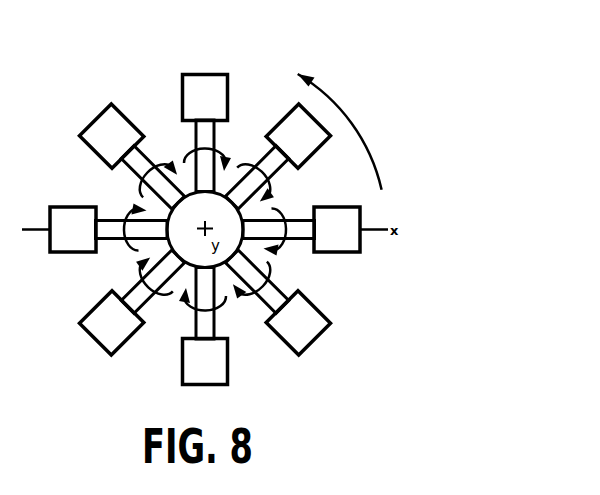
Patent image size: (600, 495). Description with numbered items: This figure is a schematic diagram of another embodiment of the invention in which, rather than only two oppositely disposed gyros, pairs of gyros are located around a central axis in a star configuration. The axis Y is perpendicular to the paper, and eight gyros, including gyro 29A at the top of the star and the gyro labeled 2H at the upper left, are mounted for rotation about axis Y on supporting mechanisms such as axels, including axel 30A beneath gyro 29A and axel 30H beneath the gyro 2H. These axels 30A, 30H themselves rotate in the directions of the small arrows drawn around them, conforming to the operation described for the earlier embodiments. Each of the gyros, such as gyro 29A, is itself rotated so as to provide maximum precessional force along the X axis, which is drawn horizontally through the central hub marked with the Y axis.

The head (rotatable mounting block) 2H is at (102, 118).
The gyro 29A is at (210, 74).
The axel 30A is at (220, 138).
The axel 30H is at (150, 150).